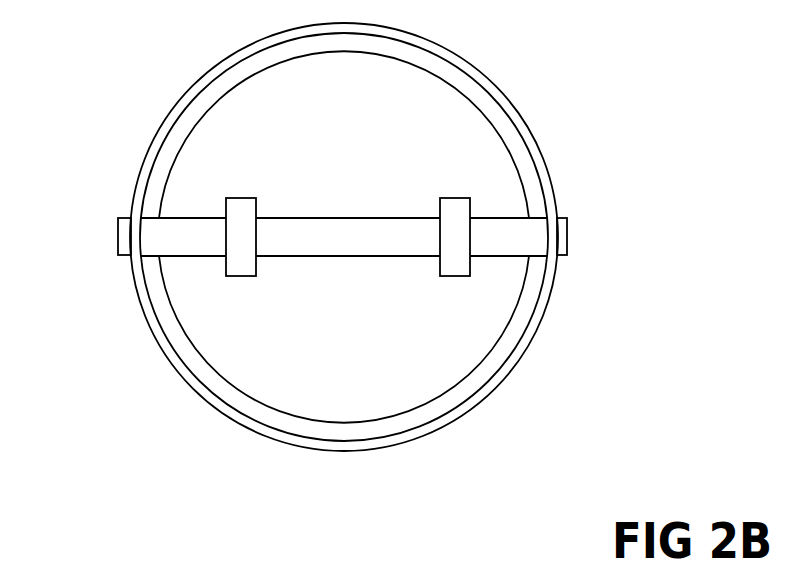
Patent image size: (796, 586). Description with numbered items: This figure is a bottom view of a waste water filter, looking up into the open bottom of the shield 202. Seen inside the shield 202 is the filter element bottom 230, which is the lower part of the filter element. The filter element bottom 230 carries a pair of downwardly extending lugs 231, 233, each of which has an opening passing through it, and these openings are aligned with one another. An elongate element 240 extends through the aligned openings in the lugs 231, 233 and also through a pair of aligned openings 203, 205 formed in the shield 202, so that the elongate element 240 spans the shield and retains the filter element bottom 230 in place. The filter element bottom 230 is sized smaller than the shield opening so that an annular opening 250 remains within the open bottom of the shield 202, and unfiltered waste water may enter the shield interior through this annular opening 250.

The shield 202 is at (537, 313).
The aligned opening within the shield 203 is at (557, 256).
The aligned opening within the shield 205 is at (128, 258).
The filter element bottom 230 is at (347, 160).
The downwardly extending lug 231 is at (236, 270).
The downwardly extending lug 233 is at (453, 267).
The elongate element 240 is at (562, 233).
The annular opening 250 is at (464, 389).